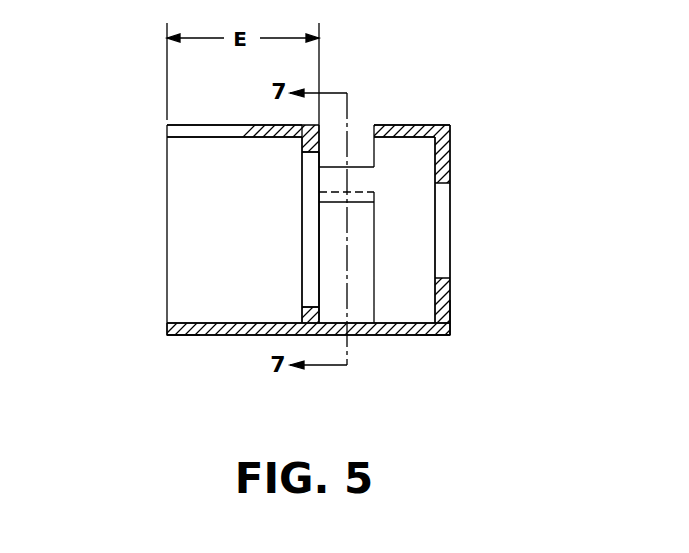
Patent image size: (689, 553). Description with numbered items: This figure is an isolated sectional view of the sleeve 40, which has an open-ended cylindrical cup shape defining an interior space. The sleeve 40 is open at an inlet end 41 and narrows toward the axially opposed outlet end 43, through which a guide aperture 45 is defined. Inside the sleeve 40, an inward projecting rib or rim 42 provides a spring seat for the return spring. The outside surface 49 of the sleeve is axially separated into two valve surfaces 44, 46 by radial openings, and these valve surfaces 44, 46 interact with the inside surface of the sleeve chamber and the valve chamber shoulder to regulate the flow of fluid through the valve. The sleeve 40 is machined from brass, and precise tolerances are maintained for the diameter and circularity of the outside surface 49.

The sleeve 40 is at (130, 104).
The inlet end 41 is at (170, 331).
The inward projecting rib or rim 42 is at (301, 314).
The outlet end 43 is at (452, 326).
The valve surface 44 is at (188, 122).
The guide aperture 45 is at (442, 259).
The valve surface 46 is at (413, 124).
The outside surface 49 is at (215, 335).